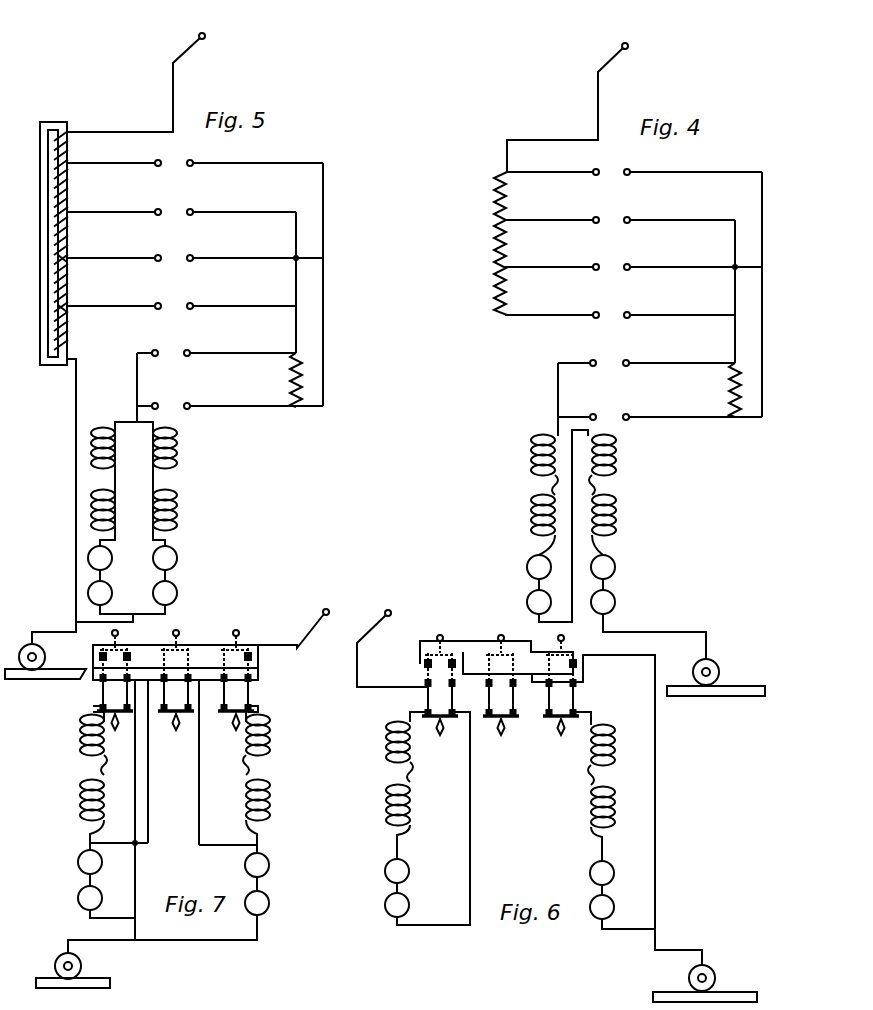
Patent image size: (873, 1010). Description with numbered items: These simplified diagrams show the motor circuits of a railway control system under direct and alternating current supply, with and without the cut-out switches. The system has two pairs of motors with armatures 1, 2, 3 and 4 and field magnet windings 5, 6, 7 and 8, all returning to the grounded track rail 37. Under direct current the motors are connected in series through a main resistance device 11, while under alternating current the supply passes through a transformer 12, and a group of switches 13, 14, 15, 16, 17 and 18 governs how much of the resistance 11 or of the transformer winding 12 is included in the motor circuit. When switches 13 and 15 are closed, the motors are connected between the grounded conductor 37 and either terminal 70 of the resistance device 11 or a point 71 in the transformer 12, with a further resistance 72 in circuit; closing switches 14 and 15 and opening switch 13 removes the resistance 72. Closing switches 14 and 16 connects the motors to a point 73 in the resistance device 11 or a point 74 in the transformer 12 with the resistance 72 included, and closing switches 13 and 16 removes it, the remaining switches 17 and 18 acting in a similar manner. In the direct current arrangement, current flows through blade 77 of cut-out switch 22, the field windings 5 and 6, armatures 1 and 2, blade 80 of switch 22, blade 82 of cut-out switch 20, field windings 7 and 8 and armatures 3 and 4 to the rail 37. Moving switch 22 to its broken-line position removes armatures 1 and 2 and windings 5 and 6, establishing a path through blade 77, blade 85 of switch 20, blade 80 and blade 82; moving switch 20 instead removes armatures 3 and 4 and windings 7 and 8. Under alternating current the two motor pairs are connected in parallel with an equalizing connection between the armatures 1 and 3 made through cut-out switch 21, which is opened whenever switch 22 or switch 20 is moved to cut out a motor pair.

In FIG. 5, the motor armature 1 is at (112, 562).
In FIG. 4, the motor armature 1 is at (551, 571).
In FIG. 7, the motor armature 1 is at (102, 866).
In FIG. 6, the motor armature 1 is at (409, 875).
In FIG. 5, the motor armature 2 is at (112, 597).
In FIG. 4, the motor armature 2 is at (551, 606).
In FIG. 7, the motor armature 2 is at (102, 902).
In FIG. 6, the motor armature 2 is at (409, 909).
In FIG. 5, the motor armature 3 is at (177, 562).
In FIG. 4, the motor armature 3 is at (615, 571).
In FIG. 7, the motor armature 3 is at (269, 869).
In FIG. 6, the motor armature 3 is at (614, 877).
In FIG. 5, the motor armature 4 is at (177, 597).
In FIG. 4, the motor armature 4 is at (615, 606).
In FIG. 7, the motor armature 4 is at (269, 907).
In FIG. 6, the motor armature 4 is at (614, 911).
In FIG. 5, the field magnet winding 5 is at (116, 455).
In FIG. 4, the field magnet winding 5 is at (556, 462).
In FIG. 7, the field magnet winding 5 is at (105, 745).
In FIG. 6, the field magnet winding 5 is at (416, 745).
In FIG. 5, the field magnet winding 6 is at (116, 512).
In FIG. 4, the field magnet winding 6 is at (556, 520).
In FIG. 7, the field magnet winding 6 is at (105, 807).
In FIG. 6, the field magnet winding 6 is at (416, 807).
In FIG. 5, the field magnet winding 7 is at (176, 455).
In FIG. 4, the field magnet winding 7 is at (616, 462).
In FIG. 7, the field magnet winding 7 is at (270, 745).
In FIG. 6, the field magnet winding 7 is at (621, 747).
In FIG. 5, the field magnet winding 8 is at (176, 512).
In FIG. 4, the field magnet winding 8 is at (616, 520).
In FIG. 7, the field magnet winding 8 is at (270, 807).
In FIG. 6, the field magnet winding 8 is at (621, 810).
In FIG. 4, the main resistance device 11 is at (506, 250).
In FIG. 5, the transformer 12 is at (68, 250).
In FIG. 5, the switch 13 is at (230, 407).
In FIG. 4, the switch 13 is at (660, 418).
In FIG. 5, the switch 14 is at (216, 354).
In FIG. 4, the switch 14 is at (646, 364).
In FIG. 5, the switch 15 is at (181, 307).
In FIG. 4, the switch 15 is at (620, 316).
In FIG. 5, the switch 16 is at (195, 259).
In FIG. 4, the switch 16 is at (633, 268).
In FIG. 5, the switch 17 is at (181, 213).
In FIG. 4, the switch 17 is at (620, 221).
In FIG. 5, the switch 18 is at (195, 164).
In FIG. 4, the switch 18 is at (634, 173).
In FIG. 7, the cut-out switch 20 is at (236, 680).
In FIG. 6, the cut-out switch 20 is at (561, 685).
In FIG. 7, the cut-out switch 21 is at (176, 680).
In FIG. 6, the cut-out switch 21 is at (501, 685).
In FIG. 7, the cut-out switch 22 is at (115, 680).
In FIG. 6, the cut-out switch 22 is at (440, 685).
In FIG. 7, the grounded return conductor or track rail 37 is at (85, 985).
In FIG. 6, the grounded return conductor or track rail 37 is at (722, 995).
In FIG. 4, the terminal of resistance device 70 is at (505, 318).
In FIG. 5, the point in transformer 71 is at (68, 311).
In FIG. 5, the resistance 72 is at (282, 380).
In FIG. 4, the resistance 72 is at (719, 390).
In FIG. 4, the point in resistance device 73 is at (505, 270).
In FIG. 5, the point in transformer 74 is at (68, 262).
In FIG. 7, the blade of cut-out switch 77 is at (100, 692).
In FIG. 6, the blade of cut-out switch 77 is at (426, 692).
In FIG. 6, the blade of cut-out switch 80 is at (454, 692).
In FIG. 7, the blade of cut-out switch 82 is at (253, 692).
In FIG. 6, the blade of cut-out switch 82 is at (576, 692).
In FIG. 6, the blade of cut-out switch 85 is at (548, 692).